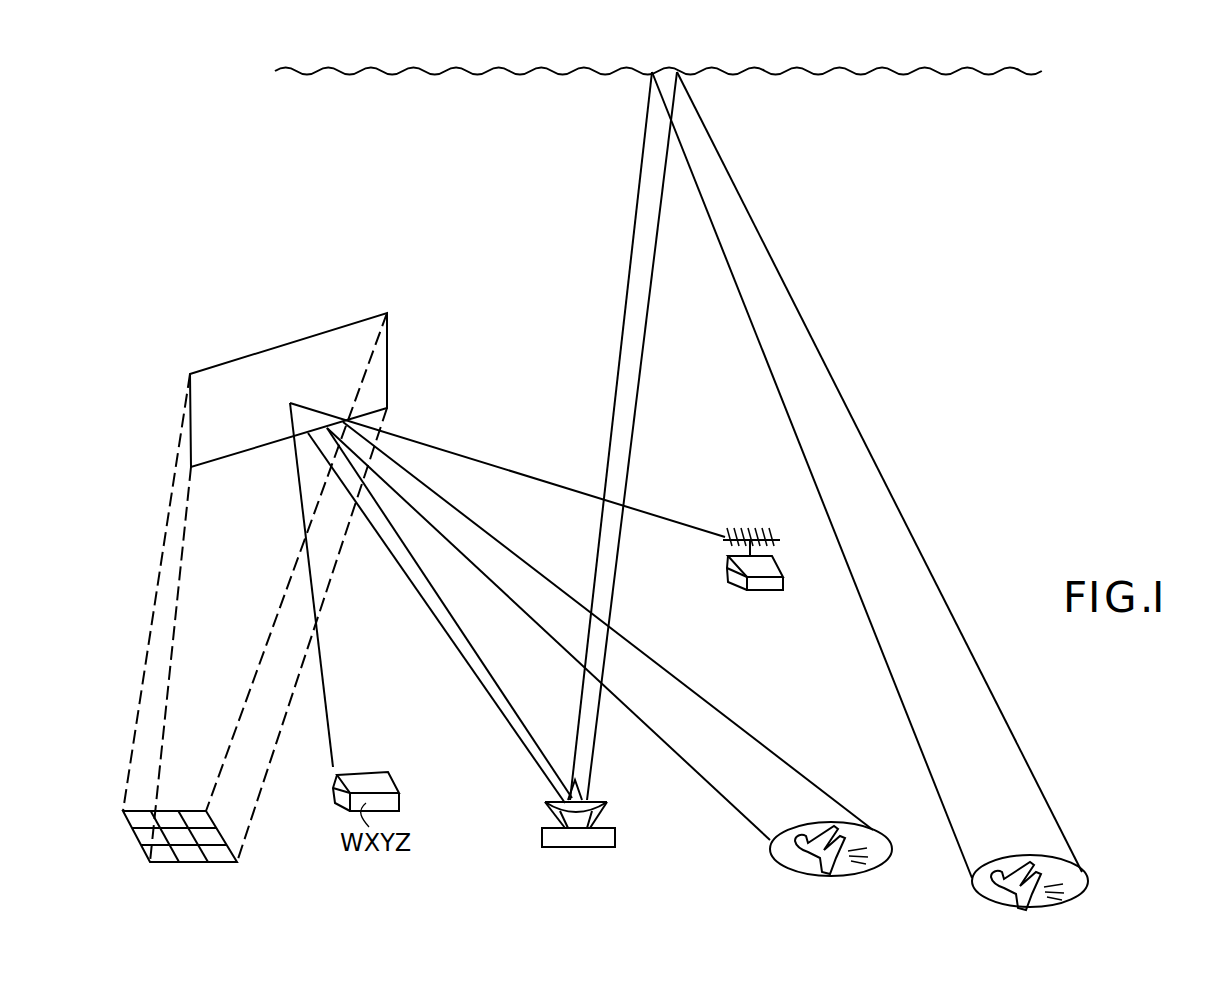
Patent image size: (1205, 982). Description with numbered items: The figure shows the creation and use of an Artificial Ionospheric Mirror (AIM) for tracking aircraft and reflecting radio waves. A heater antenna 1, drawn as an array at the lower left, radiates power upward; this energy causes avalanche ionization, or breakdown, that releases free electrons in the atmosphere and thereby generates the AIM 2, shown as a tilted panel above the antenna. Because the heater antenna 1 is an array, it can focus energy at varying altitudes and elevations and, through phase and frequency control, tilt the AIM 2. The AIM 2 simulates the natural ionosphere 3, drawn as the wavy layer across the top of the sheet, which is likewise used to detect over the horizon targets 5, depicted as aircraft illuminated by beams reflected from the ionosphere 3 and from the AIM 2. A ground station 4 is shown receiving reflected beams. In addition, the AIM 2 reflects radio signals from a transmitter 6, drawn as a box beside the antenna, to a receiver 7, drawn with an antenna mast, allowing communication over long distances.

The heater antenna 1 is at (139, 851).
The artificial ionospheric mirror (AIM) 2 is at (264, 352).
The ionosphere 3 is at (549, 71).
The radar antenna 4 is at (616, 836).
The over the horizon targets 5 is at (971, 878).
The transmitter 6 is at (400, 800).
The receiver 7 is at (774, 563).